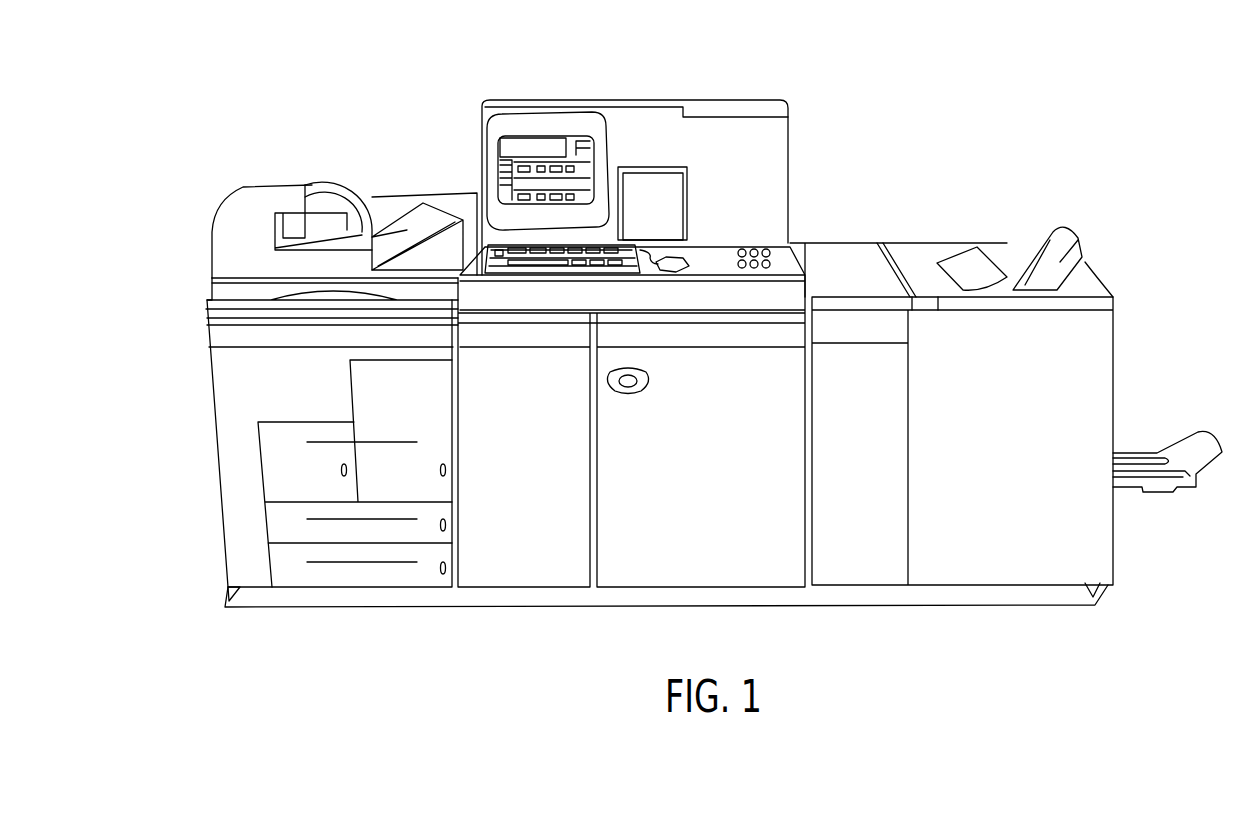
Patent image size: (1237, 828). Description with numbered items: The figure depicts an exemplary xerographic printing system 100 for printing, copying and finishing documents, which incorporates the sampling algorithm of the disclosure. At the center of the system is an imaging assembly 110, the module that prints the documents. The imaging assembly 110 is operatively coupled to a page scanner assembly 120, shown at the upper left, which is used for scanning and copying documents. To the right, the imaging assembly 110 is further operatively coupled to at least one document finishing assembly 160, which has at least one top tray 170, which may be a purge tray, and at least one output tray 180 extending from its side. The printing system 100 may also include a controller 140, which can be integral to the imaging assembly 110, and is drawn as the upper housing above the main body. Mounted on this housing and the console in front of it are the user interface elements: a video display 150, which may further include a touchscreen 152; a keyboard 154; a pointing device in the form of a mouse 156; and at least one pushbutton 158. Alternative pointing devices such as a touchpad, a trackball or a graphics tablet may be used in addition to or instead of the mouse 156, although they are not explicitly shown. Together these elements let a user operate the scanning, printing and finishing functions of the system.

The xerographic printing system 100 is at (1003, 113).
The imaging assembly 110 is at (690, 574).
The page scanner assembly 120 is at (233, 234).
The controller 140 is at (742, 113).
The video display 150 is at (490, 138).
The touchscreen 152 is at (546, 148).
The keyboard 154 is at (588, 262).
The mouse 156 is at (690, 272).
The pushbutton 158 is at (743, 238).
The document finishing assembly 160 is at (913, 255).
The top tray 170 is at (1045, 245).
The output tray 180 is at (1188, 432).